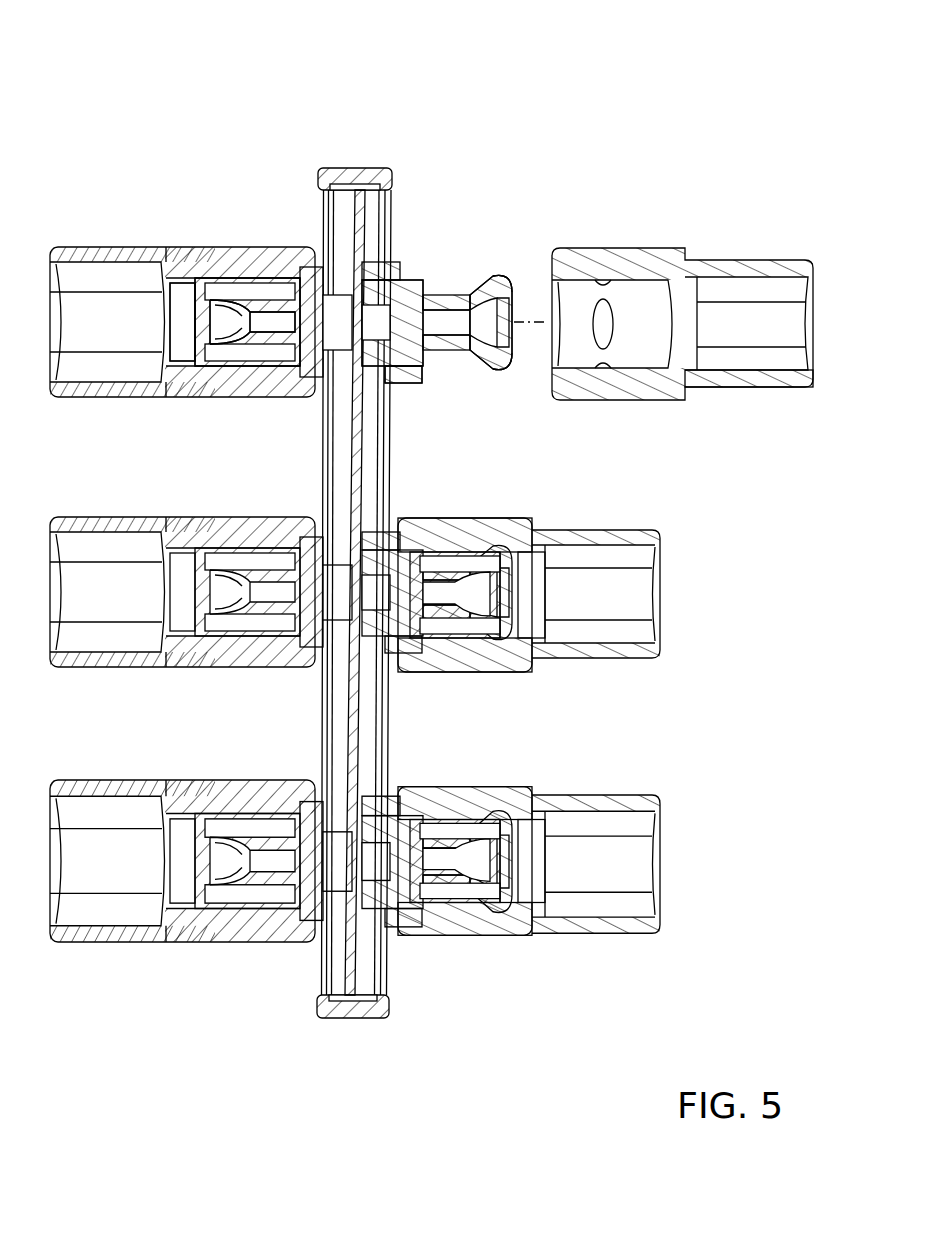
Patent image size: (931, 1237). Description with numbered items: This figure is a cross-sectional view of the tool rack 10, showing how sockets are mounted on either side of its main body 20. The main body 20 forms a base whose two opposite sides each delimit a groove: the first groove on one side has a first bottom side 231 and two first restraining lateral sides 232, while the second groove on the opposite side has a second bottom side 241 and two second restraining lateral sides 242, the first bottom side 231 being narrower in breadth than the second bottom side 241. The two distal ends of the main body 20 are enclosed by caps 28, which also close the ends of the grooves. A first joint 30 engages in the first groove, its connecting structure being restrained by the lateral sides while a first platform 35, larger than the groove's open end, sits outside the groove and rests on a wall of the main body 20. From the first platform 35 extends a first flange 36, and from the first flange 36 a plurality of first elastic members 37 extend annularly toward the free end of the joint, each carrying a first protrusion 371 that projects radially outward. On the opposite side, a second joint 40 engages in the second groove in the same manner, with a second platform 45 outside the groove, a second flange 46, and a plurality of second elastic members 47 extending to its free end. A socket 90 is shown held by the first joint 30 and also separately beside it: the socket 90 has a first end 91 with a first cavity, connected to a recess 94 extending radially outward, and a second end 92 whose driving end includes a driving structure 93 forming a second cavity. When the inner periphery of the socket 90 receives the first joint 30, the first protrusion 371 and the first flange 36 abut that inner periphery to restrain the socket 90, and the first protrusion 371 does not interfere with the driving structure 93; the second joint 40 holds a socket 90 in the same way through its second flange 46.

The tool rack 10 is at (242, 90).
The main body 20 is at (363, 549).
The cap 28 is at (355, 167).
The second bottom side 241 is at (326, 198).
The second restraining lateral side 242 is at (330, 200).
The first bottom side 231 is at (391, 196).
The first restraining lateral side 232 is at (384, 200).
The second joint 40 is at (201, 316).
The second platform 45 is at (320, 400).
The second flange 46 is at (288, 386).
The second elastic member 47 is at (243, 372).
The first joint 30 is at (454, 315).
The first platform 35 is at (394, 384).
The first flange 36 is at (414, 372).
The first elastic member 37 is at (462, 358).
The first protrusion 371 is at (500, 372).
The socket 90 is at (679, 308).
The first end 91 is at (556, 258).
The second end 92 is at (810, 268).
The driving structure 93 is at (760, 366).
The recess 94 is at (611, 288).